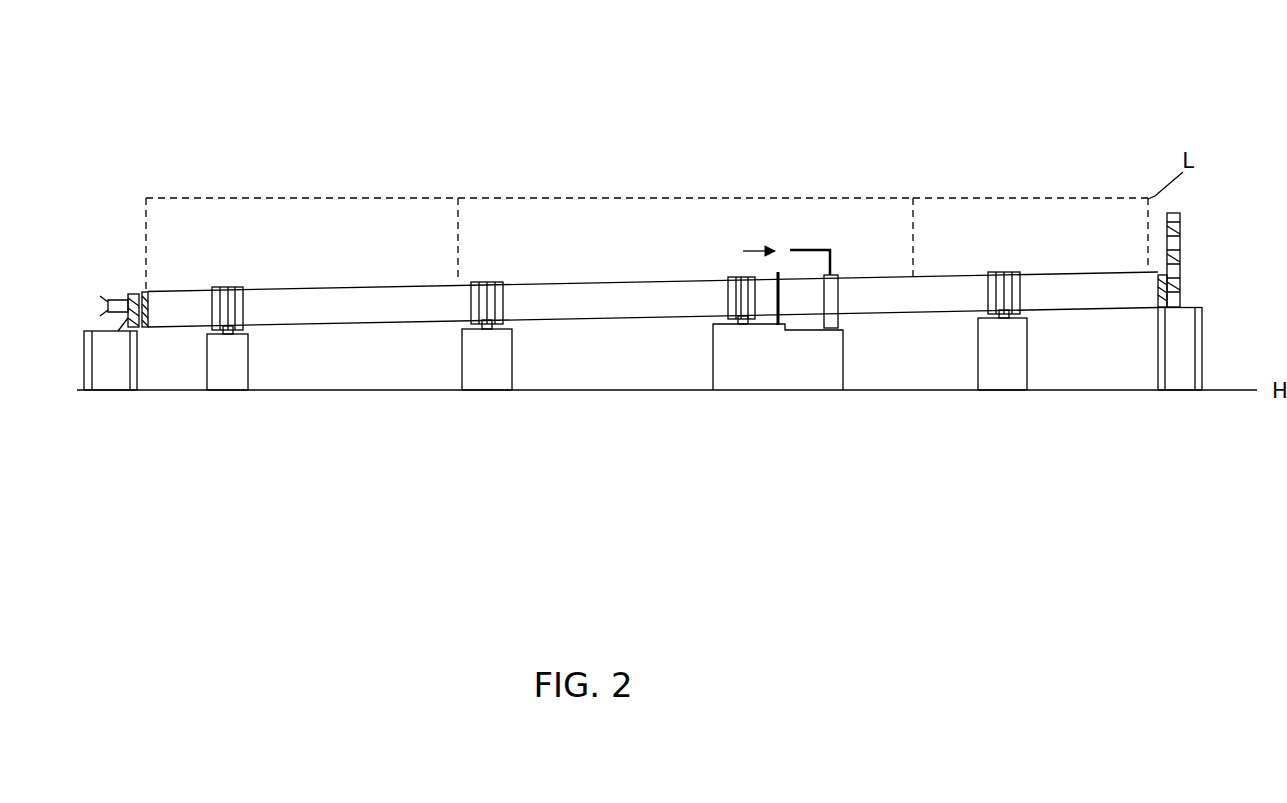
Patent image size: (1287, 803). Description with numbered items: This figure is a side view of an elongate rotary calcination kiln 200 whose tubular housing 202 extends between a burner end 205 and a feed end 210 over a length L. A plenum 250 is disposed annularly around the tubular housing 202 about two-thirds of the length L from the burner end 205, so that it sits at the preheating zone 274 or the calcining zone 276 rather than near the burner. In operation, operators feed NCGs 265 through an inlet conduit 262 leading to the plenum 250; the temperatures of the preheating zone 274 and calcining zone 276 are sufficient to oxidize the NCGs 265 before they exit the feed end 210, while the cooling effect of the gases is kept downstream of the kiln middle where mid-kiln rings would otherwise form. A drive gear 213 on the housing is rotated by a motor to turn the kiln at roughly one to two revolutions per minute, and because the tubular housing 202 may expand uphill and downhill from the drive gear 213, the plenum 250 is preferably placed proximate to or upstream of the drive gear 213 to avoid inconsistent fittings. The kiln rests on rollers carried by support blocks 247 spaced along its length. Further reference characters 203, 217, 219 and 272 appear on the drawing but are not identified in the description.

The elongate rotary calcination kiln 200 is at (463, 125).
The tubular housing 202 is at (371, 336).
The pipe 203 is at (312, 287).
The burner end 205 is at (130, 270).
The feed end 210 is at (1188, 283).
The drive gear 213 is at (772, 326).
The pipe coupling 217 is at (228, 290).
The riser post 219 is at (1181, 252).
The support blocks 247 is at (105, 380).
The plenum 250 is at (832, 273).
The inlet conduit 262 is at (808, 231).
The NCGs 265 is at (748, 249).
The third pipeline section 272 is at (985, 210).
The preheating zone 274 is at (617, 225).
The calcining zone 276 is at (198, 212).